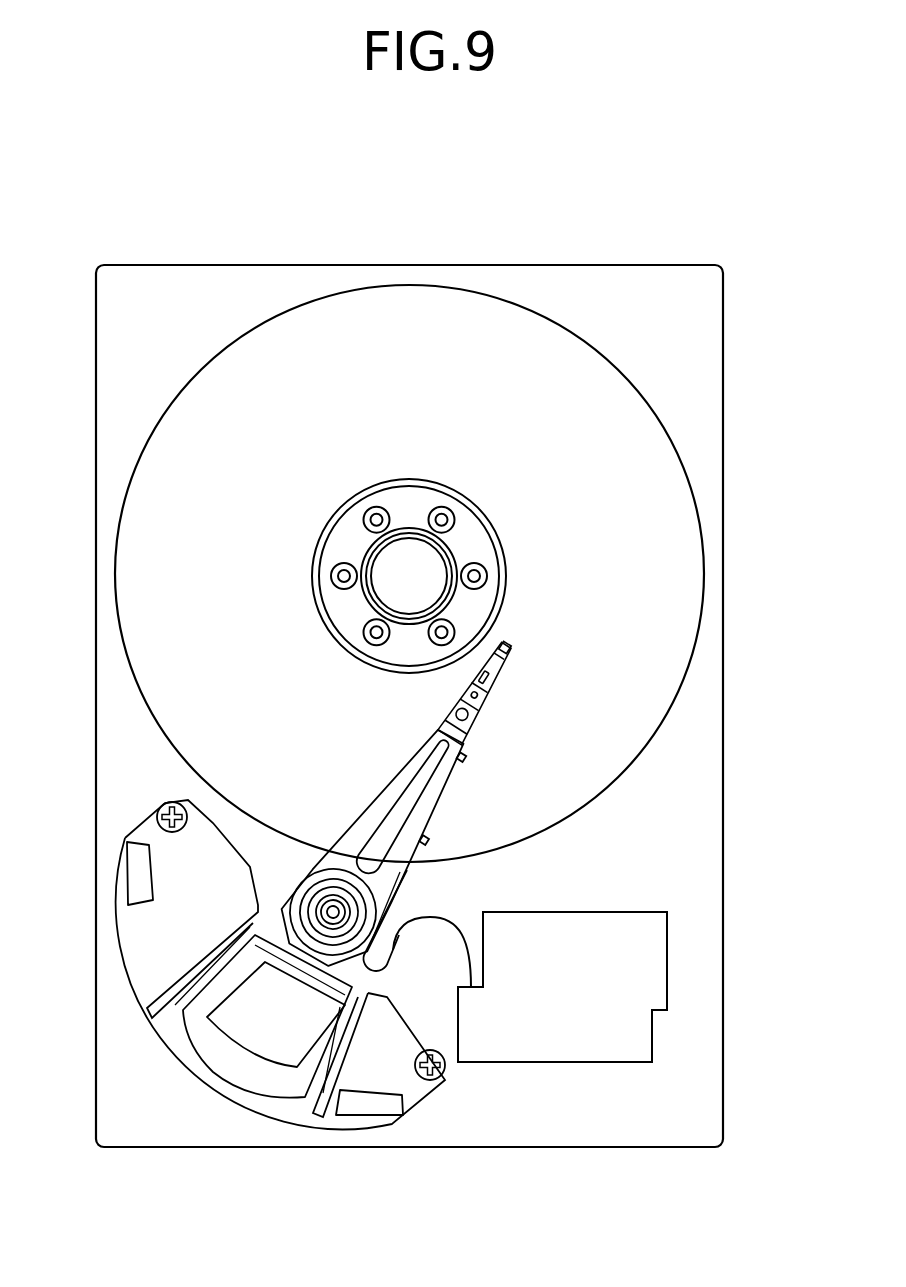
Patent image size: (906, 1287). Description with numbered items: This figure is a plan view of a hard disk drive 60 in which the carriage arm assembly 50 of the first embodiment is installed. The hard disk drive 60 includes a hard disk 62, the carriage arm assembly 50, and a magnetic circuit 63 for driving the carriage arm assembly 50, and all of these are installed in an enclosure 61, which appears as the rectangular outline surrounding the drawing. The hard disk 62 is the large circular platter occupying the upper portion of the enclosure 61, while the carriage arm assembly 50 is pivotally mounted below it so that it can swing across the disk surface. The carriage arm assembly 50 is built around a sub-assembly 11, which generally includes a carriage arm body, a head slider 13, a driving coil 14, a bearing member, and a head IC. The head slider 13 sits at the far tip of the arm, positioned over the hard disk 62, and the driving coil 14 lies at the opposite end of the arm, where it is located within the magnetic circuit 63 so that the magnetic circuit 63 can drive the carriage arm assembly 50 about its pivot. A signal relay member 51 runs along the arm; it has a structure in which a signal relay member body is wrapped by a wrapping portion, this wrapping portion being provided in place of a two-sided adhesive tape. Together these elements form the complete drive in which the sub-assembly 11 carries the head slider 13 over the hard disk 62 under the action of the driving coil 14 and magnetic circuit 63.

The hard disk drive 60 is at (672, 217).
The enclosure 61 is at (723, 788).
The hard disk 62 is at (600, 378).
The magnetic circuit 63 is at (133, 947).
The carriage arm assembly 50 is at (316, 814).
The sub-assembly 11 is at (350, 790).
The signal relay member 51 is at (447, 788).
The head slider 13 is at (513, 652).
The driving coil 14 is at (217, 1043).